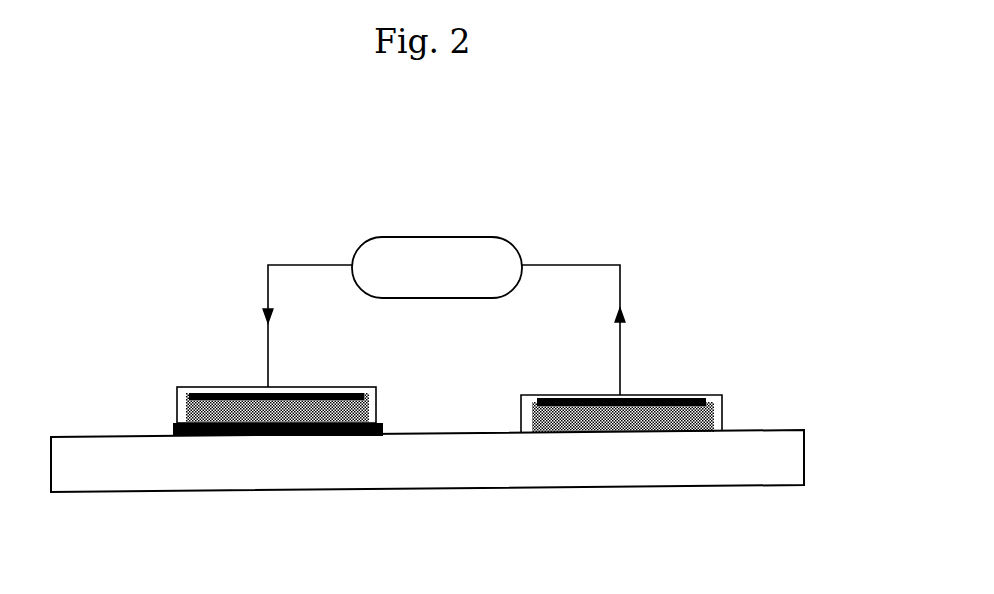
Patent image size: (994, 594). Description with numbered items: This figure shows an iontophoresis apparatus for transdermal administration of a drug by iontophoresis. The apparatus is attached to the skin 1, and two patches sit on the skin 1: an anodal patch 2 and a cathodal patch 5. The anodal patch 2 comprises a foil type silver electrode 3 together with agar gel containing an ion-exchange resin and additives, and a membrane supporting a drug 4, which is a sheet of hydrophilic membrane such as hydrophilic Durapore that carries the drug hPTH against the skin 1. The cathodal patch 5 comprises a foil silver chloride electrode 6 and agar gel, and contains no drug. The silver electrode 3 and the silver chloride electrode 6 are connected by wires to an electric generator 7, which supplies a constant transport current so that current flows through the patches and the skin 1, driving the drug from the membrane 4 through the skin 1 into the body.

The skin 1 is at (815, 459).
The anodal patch 2 is at (155, 414).
The silver electrode 3 is at (222, 390).
The membrane supporting a drug 4 is at (237, 437).
The cathodal patch 5 is at (733, 405).
The silver chloride electrode 6 is at (565, 402).
The electric generator 7 is at (505, 225).